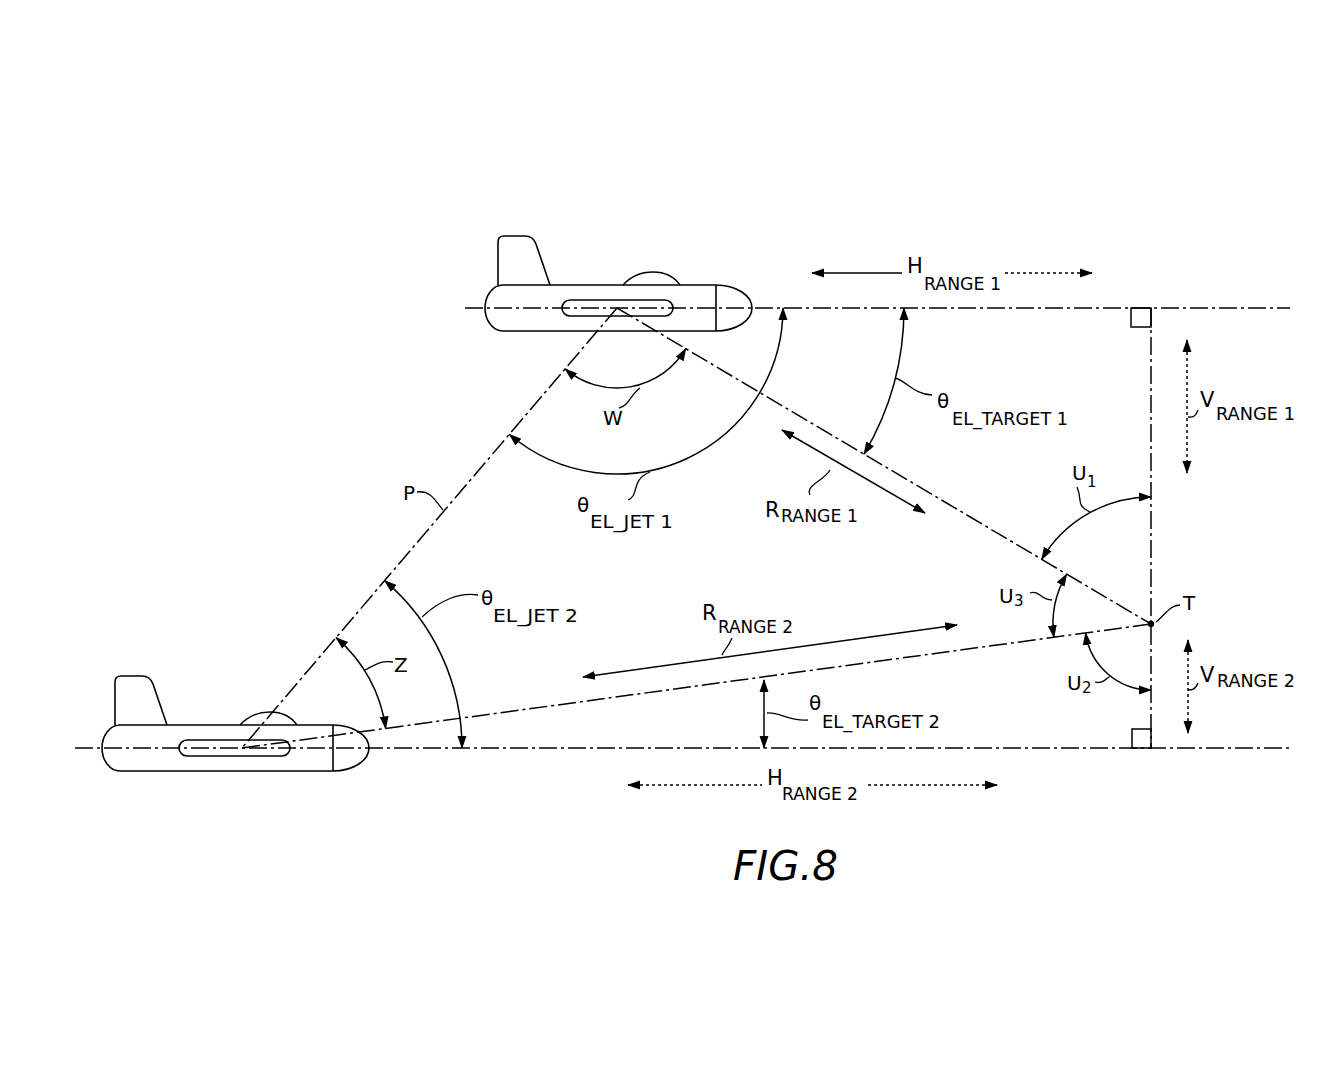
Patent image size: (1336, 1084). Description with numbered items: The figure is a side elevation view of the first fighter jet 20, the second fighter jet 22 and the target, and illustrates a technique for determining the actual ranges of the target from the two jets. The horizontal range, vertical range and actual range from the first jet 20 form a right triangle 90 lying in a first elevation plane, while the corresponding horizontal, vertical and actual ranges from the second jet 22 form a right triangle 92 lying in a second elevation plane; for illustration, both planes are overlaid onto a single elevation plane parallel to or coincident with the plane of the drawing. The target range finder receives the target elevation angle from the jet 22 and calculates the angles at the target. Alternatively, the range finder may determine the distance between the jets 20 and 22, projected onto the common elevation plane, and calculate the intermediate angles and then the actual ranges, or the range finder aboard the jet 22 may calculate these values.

The first fighter jet 20 is at (487, 316).
The second fighter jet 22 is at (113, 769).
The right triangle 90 is at (1155, 290).
The right triangle 92 is at (1156, 760).